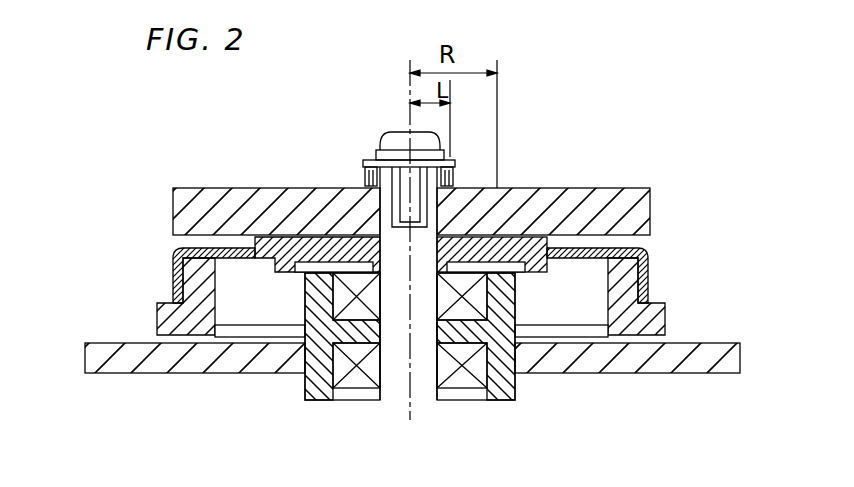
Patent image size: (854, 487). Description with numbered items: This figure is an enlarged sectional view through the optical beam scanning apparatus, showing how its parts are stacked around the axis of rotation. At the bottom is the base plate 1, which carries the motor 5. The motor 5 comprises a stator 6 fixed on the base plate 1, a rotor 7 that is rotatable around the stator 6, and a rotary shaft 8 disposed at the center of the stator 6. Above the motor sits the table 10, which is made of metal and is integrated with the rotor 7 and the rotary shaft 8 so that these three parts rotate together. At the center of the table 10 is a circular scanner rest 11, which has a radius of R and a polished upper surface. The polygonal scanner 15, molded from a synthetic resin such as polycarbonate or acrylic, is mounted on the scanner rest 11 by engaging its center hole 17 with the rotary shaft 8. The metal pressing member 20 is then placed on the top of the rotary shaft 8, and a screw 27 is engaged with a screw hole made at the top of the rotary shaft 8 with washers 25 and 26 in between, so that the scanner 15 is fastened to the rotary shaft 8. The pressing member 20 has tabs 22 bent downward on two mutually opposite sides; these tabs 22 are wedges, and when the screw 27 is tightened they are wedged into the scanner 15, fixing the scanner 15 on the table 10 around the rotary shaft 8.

The base plate 1 is at (648, 373).
The motor 5 is at (478, 408).
The stator 6 is at (305, 385).
The rotor 7 is at (213, 293).
The rotary shaft 8 is at (394, 385).
The table 10 is at (536, 270).
The scanner rest 11 is at (480, 237).
The polygonal scanner 15 is at (203, 182).
The center hole 17 is at (382, 237).
The pressing member 20 is at (366, 176).
The tabs 22 is at (363, 184).
The washer 25 is at (368, 160).
The washer 26 is at (376, 150).
The screw 27 is at (391, 132).